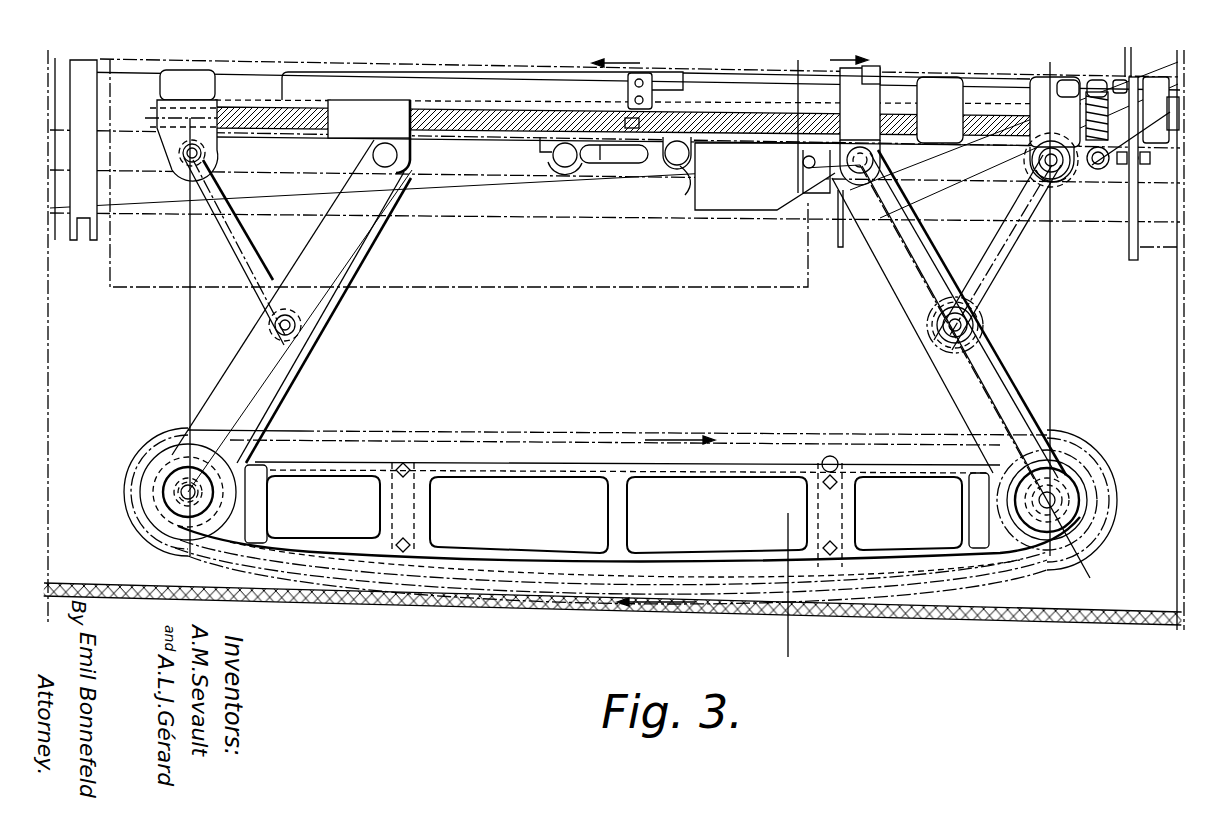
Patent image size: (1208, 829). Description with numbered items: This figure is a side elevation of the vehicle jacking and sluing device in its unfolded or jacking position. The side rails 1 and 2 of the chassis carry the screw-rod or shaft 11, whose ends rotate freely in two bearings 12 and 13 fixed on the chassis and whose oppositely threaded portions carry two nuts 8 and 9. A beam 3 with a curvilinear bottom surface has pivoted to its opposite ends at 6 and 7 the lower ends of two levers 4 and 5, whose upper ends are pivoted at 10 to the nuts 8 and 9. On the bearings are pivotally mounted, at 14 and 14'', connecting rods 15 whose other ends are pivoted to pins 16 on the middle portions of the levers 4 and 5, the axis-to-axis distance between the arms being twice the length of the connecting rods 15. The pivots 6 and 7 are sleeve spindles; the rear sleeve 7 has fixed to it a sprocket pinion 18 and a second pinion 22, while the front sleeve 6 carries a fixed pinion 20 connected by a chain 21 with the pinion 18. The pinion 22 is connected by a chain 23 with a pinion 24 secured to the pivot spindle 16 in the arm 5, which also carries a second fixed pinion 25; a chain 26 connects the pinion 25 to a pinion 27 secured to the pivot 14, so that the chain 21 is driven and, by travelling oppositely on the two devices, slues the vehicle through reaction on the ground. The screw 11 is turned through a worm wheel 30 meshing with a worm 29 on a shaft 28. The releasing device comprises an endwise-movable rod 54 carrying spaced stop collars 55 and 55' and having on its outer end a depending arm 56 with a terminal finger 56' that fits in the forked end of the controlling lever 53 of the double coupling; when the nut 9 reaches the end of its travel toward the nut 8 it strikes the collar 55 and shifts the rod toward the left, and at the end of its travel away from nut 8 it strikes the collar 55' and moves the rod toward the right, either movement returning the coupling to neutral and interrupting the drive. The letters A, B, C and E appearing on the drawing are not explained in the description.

The side rail 1 is at (109, 80).
The side rail 2 is at (104, 139).
The beam 3 is at (617, 478).
The lever 4 is at (272, 384).
The lever 5 is at (972, 378).
The pivot 6 is at (182, 488).
The pivot 7 is at (1054, 496).
The nut 8 is at (371, 110).
The nut 9 is at (668, 165).
The pivot 10 is at (393, 162).
The screw-rod 11 is at (547, 110).
The bearing 12 is at (181, 106).
The bearing 13 is at (1040, 102).
The pivot 14 is at (1074, 193).
The pivot 14'' is at (161, 192).
The connecting rod 15 is at (242, 257).
The pin 16 is at (274, 326).
The sprocket pinion 18 is at (1094, 490).
The pinion 20 is at (152, 532).
The chain 21 is at (451, 433).
The pinion 22 is at (1082, 522).
The chain 23 is at (1035, 400).
The pinion 24 is at (930, 322).
The pinion 25 is at (980, 357).
The chain 26 is at (995, 205).
The pinion 27 is at (1062, 182).
The shaft 28 is at (1141, 127).
The worm 29 is at (1100, 172).
The worm wheel 30 is at (1098, 110).
The controlling lever 53 is at (1150, 160).
The endwise-movable rod 54 is at (985, 75).
The stop collar 55 is at (646, 89).
The stop collar 55' is at (859, 57).
The depending arm 56 is at (1146, 146).
The terminal finger 56' is at (1156, 184).
The section line A is at (808, 120).
The section line B is at (796, 585).
The centre line C is at (1060, 303).
The line E is at (985, 377).